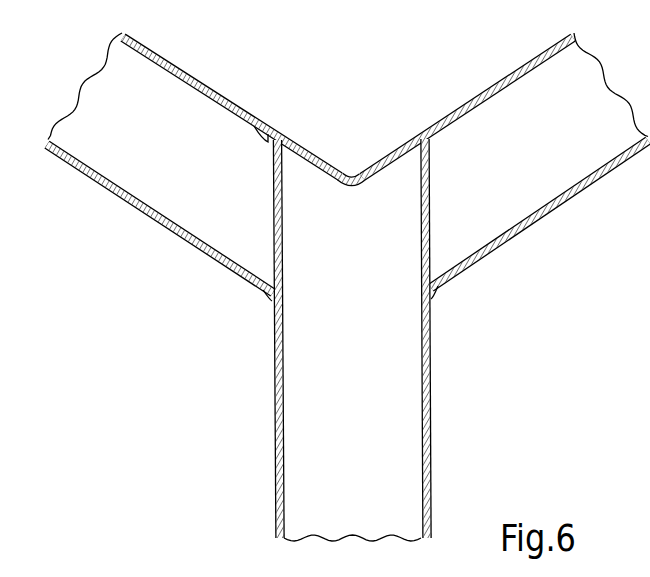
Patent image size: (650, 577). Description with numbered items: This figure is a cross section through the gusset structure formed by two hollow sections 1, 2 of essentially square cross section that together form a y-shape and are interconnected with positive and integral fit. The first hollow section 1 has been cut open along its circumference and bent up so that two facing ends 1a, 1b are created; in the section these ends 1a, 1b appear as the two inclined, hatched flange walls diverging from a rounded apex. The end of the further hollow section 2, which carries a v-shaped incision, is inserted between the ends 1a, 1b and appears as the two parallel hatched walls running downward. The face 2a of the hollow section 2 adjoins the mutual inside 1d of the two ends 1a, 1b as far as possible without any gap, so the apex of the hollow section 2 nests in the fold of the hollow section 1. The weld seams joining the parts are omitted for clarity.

The hollow section 1 is at (123, 237).
The end of the hollow section 1a is at (168, 93).
The end of the hollow section 1b is at (527, 107).
The mutual inside of the two ends 1d is at (259, 119).
The hollow section 2 is at (257, 438).
The face of the hollow section 2a is at (337, 188).